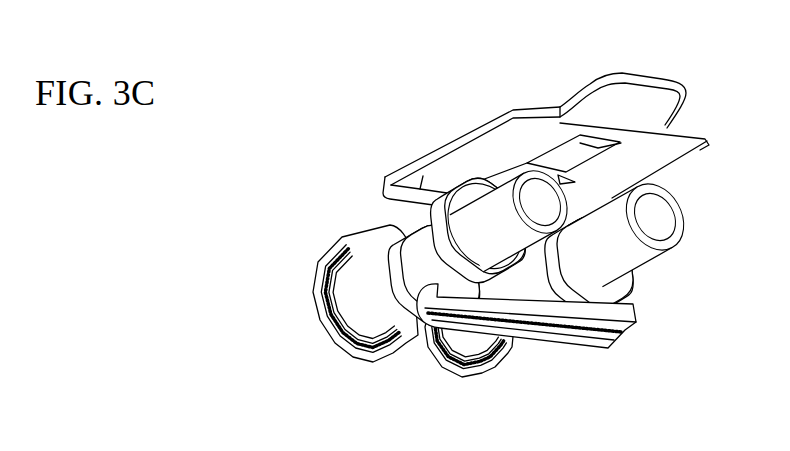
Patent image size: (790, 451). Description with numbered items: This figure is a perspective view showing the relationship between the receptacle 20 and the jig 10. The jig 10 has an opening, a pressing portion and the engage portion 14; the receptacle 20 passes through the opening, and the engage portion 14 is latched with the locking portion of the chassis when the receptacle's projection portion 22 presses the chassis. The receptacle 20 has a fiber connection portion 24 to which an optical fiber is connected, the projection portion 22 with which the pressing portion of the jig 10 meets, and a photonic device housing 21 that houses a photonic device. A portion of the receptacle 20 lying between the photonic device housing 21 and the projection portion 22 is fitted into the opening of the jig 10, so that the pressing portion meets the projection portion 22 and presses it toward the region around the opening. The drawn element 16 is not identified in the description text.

The jig 10 is at (535, 224).
The engage portion 14 is at (697, 153).
The bar 16 is at (584, 352).
The receptacle 20 is at (358, 364).
The photonic device housing 21 is at (394, 334).
The projection portion 22 is at (453, 200).
The fiber connection portion 24 is at (503, 190).